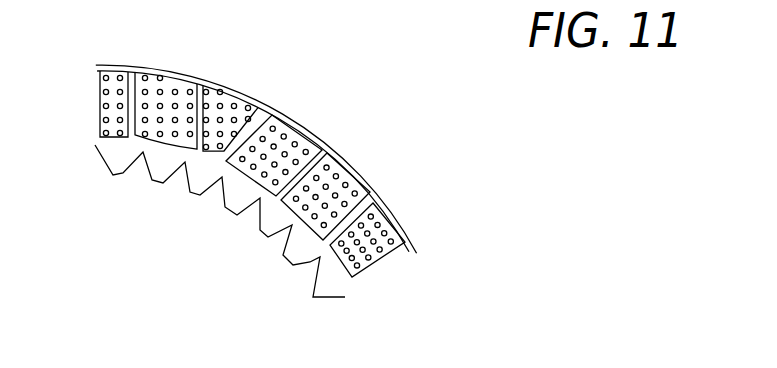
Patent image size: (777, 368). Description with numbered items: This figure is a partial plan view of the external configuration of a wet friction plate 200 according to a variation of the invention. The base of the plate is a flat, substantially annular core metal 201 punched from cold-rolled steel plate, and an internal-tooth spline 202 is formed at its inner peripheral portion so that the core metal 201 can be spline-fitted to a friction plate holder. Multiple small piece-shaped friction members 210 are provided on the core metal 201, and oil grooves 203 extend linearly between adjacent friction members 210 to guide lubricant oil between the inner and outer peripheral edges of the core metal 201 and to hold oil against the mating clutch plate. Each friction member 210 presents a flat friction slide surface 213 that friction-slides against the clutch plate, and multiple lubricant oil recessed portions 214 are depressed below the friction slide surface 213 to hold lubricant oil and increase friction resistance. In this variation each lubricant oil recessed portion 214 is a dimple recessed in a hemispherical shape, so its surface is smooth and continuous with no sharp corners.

The wet friction plate 200 is at (305, 47).
The core metal 201 is at (102, 64).
The internal-tooth spline 202 is at (113, 176).
The oil groove 203 is at (198, 84).
The friction member 210 is at (310, 141).
The friction slide surface 213 is at (102, 118).
The lubricant oil recessed portion 214 is at (338, 178).